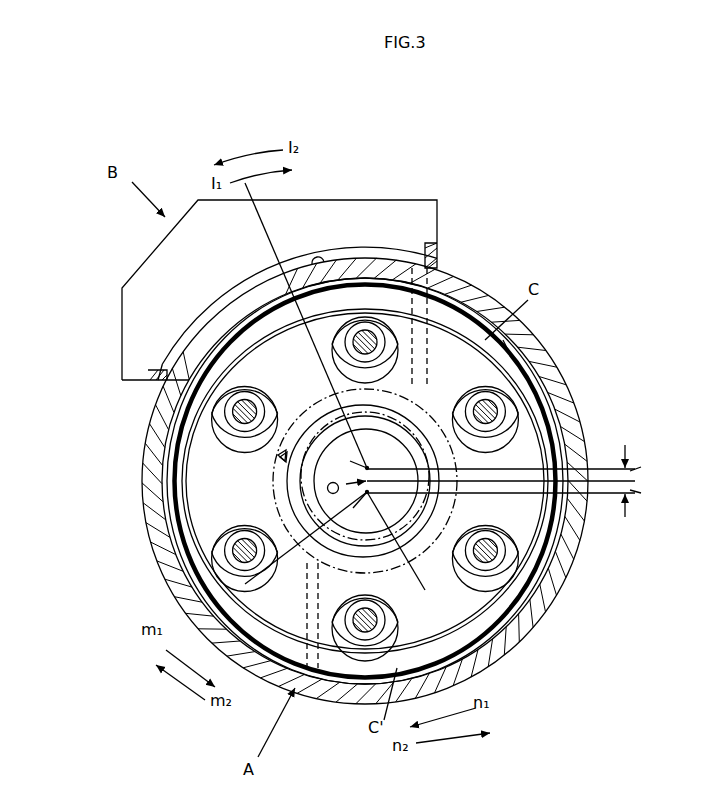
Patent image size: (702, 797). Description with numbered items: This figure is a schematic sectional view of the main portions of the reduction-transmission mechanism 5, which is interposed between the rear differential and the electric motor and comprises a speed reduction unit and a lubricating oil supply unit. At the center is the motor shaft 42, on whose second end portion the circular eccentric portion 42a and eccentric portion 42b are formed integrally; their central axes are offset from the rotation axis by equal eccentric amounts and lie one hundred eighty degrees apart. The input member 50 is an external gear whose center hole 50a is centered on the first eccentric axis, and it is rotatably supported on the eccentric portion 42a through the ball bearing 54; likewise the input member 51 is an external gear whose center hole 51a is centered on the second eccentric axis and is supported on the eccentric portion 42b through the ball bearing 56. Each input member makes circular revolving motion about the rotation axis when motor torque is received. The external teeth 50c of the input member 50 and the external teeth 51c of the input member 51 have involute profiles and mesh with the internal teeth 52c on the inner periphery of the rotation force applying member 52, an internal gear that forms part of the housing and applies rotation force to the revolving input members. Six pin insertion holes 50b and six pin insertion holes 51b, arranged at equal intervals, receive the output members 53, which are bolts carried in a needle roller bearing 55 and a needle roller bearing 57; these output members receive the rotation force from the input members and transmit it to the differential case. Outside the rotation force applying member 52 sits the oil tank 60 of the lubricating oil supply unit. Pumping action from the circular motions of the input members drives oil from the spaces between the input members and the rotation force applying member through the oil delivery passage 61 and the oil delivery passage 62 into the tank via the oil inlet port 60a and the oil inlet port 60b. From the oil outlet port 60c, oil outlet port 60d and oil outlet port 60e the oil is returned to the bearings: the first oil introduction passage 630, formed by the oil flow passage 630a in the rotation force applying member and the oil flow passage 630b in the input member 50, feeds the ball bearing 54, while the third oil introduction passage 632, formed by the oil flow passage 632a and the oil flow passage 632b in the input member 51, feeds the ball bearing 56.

The reduction-transmission mechanism 5 is at (609, 139).
The motor shaft 42 is at (352, 394).
The eccentric portion 42a is at (352, 394).
The eccentric portion 42b is at (367, 468).
The input member 50 is at (209, 497).
The center hole 50a is at (312, 580).
The pin insertion holes 50b is at (370, 325).
The external teeth 50c is at (505, 345).
The input member 51 is at (503, 363).
The center hole 51a is at (279, 458).
The pin insertion holes 51b is at (428, 468).
The external teeth 51c is at (180, 422).
The rotation force applying member 52 is at (501, 295).
The internal teeth 52c is at (238, 354).
The output members 53 is at (428, 468).
The ball bearing 54 is at (333, 578).
The needle roller bearing 55 is at (428, 468).
The ball bearing 56 is at (510, 444).
The needle roller bearing 57 is at (428, 468).
The oil tank 60 is at (278, 259).
The oil inlet port 60a is at (278, 259).
The oil inlet port 60b is at (278, 259).
The oil outlet port 60c is at (278, 259).
The oil outlet port 60d is at (278, 259).
The oil outlet port 60e is at (278, 259).
The oil delivery passage 61 is at (278, 259).
The oil delivery passage 62 is at (167, 258).
The first oil introduction passage 630 is at (408, 466).
The oil flow passage 630a is at (408, 466).
The oil flow passage 630b is at (408, 466).
The third oil introduction passage 632 is at (408, 466).
The oil flow passage 632a is at (408, 466).
The oil flow passage 632b is at (447, 285).